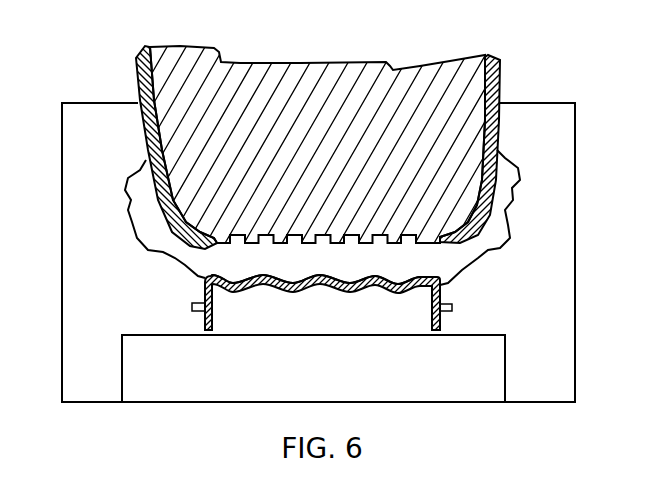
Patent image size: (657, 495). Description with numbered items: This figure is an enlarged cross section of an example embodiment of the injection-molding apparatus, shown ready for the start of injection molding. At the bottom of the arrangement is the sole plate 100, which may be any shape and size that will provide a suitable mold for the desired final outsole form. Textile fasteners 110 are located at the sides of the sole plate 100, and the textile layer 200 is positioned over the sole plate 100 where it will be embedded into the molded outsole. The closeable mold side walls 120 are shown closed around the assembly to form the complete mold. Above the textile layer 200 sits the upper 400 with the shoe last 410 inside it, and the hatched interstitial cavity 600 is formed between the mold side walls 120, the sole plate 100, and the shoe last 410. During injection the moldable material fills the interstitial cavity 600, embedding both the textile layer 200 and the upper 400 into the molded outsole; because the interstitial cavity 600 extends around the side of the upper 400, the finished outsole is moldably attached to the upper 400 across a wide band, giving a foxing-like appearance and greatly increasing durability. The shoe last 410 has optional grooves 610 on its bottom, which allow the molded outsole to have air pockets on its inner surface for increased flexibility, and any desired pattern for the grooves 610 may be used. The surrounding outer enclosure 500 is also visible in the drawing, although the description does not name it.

The sole plate 100 is at (276, 322).
The textile fasteners 110 is at (192, 307).
The closeable mold side walls 120 is at (164, 256).
The textile layer 200 is at (441, 285).
The upper 400 is at (136, 83).
The shoe last 410 is at (358, 72).
The housing / chamber 500 is at (577, 287).
The interstitial cavity 600 is at (127, 200).
The grooves 610 is at (320, 279).